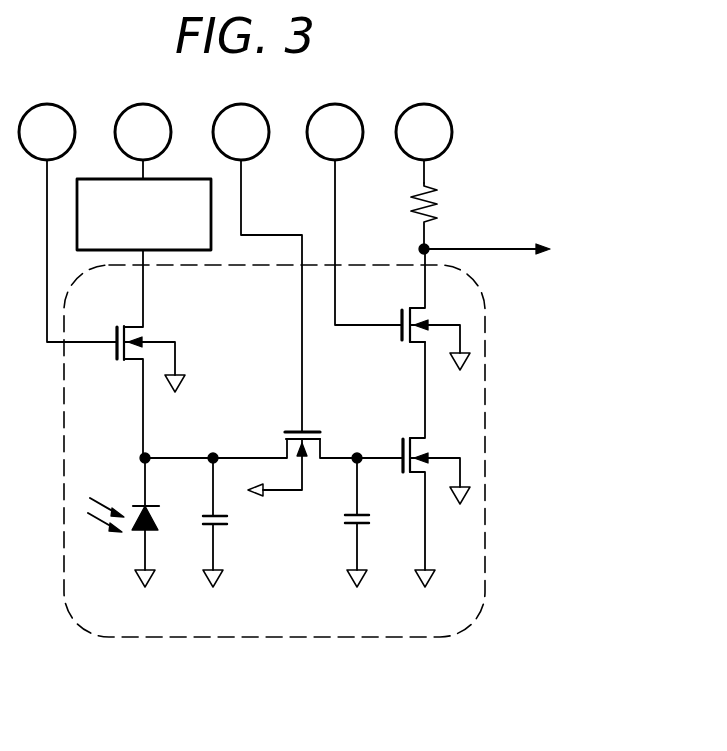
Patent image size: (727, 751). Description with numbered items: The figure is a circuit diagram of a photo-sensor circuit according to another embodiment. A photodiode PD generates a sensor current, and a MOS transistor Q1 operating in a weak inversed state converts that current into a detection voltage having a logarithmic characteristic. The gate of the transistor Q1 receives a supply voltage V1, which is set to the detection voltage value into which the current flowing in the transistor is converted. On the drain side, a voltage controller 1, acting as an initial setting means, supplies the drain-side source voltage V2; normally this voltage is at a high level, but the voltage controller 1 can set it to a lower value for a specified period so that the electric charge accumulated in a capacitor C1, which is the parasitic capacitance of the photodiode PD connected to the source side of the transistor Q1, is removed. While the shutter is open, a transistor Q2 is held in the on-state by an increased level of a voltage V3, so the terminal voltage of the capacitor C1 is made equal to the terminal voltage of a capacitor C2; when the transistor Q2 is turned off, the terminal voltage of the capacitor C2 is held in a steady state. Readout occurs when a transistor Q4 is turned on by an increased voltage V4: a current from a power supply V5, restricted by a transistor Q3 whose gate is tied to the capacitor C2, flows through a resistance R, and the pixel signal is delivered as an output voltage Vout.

The voltage controller 1 is at (108, 178).
The supply voltage V1 is at (68, 223).
The drain-side source voltage V2 is at (143, 215).
The voltage V3 is at (257, 268).
The voltage V4 is at (354, 214).
The power supply V5 is at (424, 143).
The resistance R is at (434, 216).
The output voltage Vout is at (520, 250).
The MOS transistor Q1 is at (146, 375).
The transistor Q2 is at (274, 449).
The transistor Q3 is at (427, 464).
The transistor Q4 is at (427, 309).
The photodiode PD is at (123, 522).
The capacitor C1 is at (205, 522).
The capacitor C2 is at (345, 522).